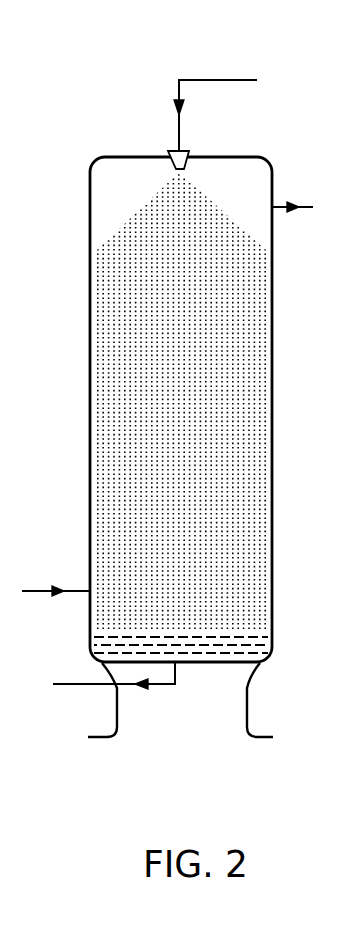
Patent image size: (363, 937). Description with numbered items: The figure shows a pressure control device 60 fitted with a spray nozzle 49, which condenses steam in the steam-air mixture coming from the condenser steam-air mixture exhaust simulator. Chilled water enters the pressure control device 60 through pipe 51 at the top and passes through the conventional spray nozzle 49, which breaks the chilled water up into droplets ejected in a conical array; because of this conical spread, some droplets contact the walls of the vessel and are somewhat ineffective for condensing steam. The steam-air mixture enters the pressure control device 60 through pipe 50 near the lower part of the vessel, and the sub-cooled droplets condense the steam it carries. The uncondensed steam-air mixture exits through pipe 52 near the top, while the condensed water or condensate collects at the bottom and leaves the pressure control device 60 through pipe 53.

The spray nozzle 49 is at (167, 150).
The pipe 50 is at (38, 585).
The pipe 51 is at (195, 72).
The pipe 52 is at (298, 202).
The pipe 53 is at (158, 693).
The pressure control device 60 is at (193, 411).